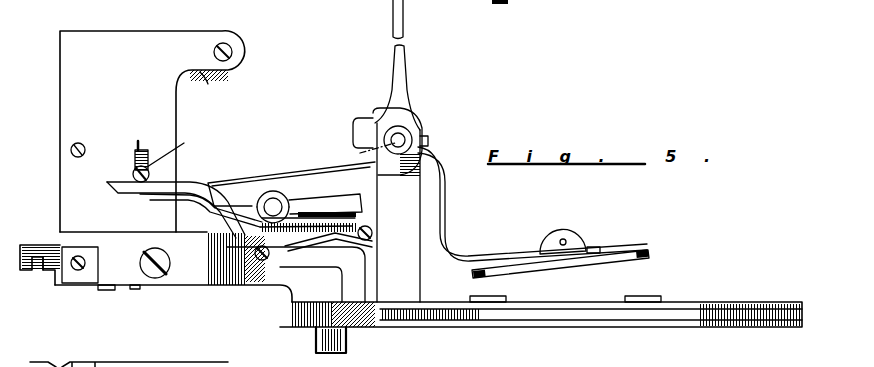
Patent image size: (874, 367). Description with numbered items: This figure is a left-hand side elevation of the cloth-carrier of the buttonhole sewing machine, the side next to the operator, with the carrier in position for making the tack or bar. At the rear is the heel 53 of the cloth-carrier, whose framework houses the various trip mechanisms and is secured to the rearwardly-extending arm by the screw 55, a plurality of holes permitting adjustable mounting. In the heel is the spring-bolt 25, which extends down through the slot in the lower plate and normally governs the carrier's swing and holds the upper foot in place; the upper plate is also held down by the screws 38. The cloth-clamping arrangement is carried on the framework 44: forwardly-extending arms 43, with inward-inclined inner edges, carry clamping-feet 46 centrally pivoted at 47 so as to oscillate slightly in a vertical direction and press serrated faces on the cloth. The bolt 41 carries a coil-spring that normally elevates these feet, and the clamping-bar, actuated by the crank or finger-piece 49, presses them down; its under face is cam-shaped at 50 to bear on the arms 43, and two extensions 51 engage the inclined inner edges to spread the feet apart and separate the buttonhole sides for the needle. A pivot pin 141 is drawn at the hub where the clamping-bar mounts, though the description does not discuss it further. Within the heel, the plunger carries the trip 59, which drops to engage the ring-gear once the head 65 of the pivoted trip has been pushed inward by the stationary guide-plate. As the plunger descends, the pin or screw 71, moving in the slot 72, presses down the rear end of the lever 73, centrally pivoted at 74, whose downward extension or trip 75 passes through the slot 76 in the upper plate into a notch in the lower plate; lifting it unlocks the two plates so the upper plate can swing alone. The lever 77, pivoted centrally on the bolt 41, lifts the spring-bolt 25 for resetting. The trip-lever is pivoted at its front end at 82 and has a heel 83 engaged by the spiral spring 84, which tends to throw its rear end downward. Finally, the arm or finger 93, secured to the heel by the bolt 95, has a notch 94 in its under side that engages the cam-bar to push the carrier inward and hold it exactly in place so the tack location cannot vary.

The spring-bolt 25 is at (346, 340).
The screws 38 is at (642, 296).
The bolt 41 is at (273, 200).
The forwardly-extending arms 43 is at (446, 200).
The framework 44 is at (389, 212).
The clamping-feet 46 is at (600, 258).
The pivot 47 is at (565, 240).
The crank or finger-piece 49 is at (403, 13).
The cam-shaped under face 50 is at (372, 122).
The extensions 51 is at (354, 133).
The heel 53 is at (152, 131).
The screw 55 is at (170, 262).
The trip 59 is at (108, 290).
The head of the trip 65 is at (138, 290).
The pin or screw 71 is at (176, 148).
The slot 72 is at (138, 151).
The lever 73 is at (193, 186).
The pivot 74 is at (262, 260).
The downward extension or trip 75 is at (296, 274).
The slot 76 is at (330, 290).
The lever 77 is at (142, 189).
The pivot 82 is at (233, 48).
The heel of trip-lever 83 is at (228, 78).
The spiral spring 84 is at (204, 82).
The arm or finger 93 is at (33, 243).
The notch 94 is at (38, 272).
The bolt 95 is at (75, 272).
The pivot pin 141 is at (400, 138).